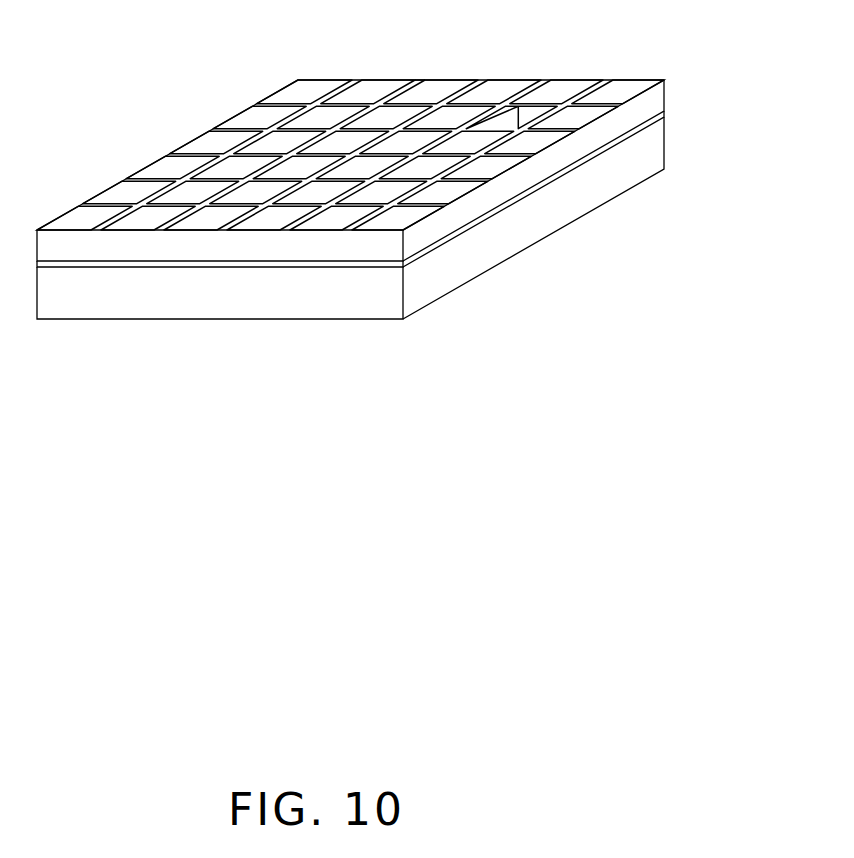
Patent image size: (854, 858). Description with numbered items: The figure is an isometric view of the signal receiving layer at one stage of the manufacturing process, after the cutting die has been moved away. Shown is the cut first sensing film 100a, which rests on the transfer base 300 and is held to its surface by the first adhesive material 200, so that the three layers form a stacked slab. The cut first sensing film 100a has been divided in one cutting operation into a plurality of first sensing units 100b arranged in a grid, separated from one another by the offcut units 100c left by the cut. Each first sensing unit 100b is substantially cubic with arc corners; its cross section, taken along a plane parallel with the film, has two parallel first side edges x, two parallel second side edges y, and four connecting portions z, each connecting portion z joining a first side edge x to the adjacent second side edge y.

The cut first sensing film 100a is at (652, 97).
The first sensing unit 100b is at (557, 90).
The offcut unit 100c is at (600, 79).
The first adhesive material 200 is at (652, 116).
The transfer base 300 is at (652, 152).
The first side edge x is at (457, 78).
The second side edge y is at (402, 82).
The connecting portion z is at (420, 77).